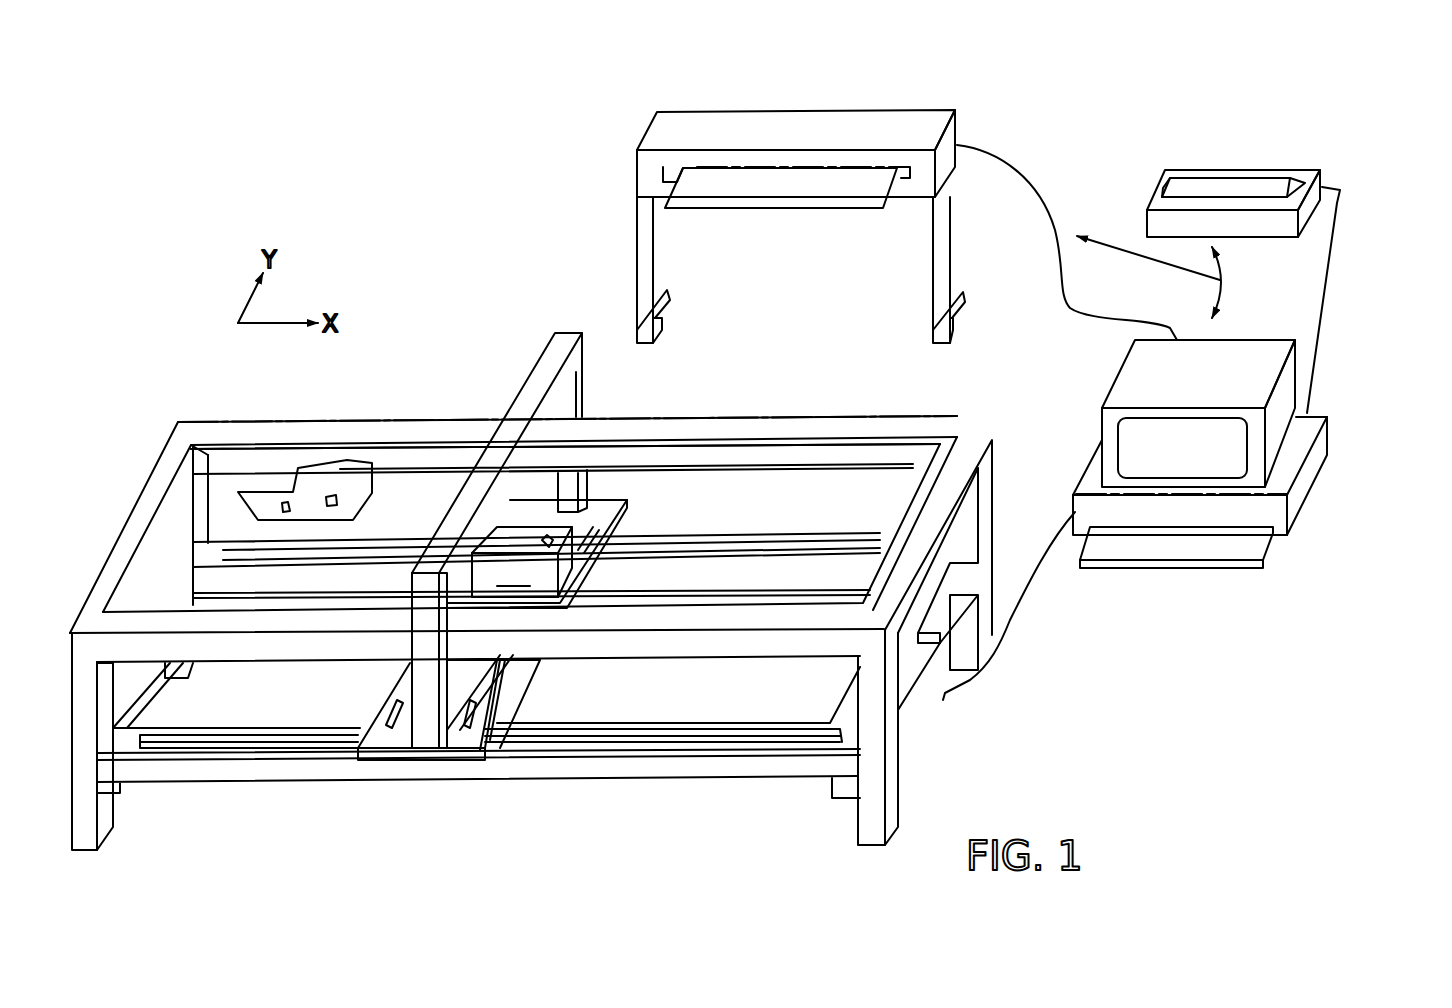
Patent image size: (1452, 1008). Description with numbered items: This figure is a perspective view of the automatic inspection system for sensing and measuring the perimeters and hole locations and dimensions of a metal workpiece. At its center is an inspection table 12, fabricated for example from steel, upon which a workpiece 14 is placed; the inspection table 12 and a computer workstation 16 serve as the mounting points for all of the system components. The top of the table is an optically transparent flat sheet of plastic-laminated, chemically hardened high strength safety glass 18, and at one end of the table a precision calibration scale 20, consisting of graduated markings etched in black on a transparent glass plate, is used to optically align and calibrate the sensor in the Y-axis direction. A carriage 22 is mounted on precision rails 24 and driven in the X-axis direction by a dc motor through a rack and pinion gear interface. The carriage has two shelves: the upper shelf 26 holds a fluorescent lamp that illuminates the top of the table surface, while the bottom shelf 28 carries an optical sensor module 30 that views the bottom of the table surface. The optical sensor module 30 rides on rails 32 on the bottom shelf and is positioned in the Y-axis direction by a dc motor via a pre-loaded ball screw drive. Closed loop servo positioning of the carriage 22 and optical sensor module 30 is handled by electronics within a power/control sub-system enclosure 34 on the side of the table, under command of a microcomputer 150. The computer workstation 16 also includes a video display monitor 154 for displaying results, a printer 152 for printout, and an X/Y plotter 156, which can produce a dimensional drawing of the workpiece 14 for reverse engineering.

The inspection table 12 is at (517, 803).
The workpiece 14 is at (340, 476).
The computer workstation 16 is at (1222, 280).
The safety glass 18 is at (787, 500).
The precision calibration scale 20 is at (933, 453).
The carriage 22 is at (423, 716).
The precision rails 24 is at (770, 547).
The upper shelf 26 is at (525, 398).
The bottom shelf 28 is at (460, 690).
The optical sensor module 30 is at (537, 554).
The rails 32 is at (467, 708).
The power/control sub-system enclosure 34 is at (915, 737).
The microcomputer 150 is at (1308, 473).
The printer 152 is at (1212, 172).
The video display monitor 154 is at (1166, 390).
The X/Y plotter 156 is at (777, 128).